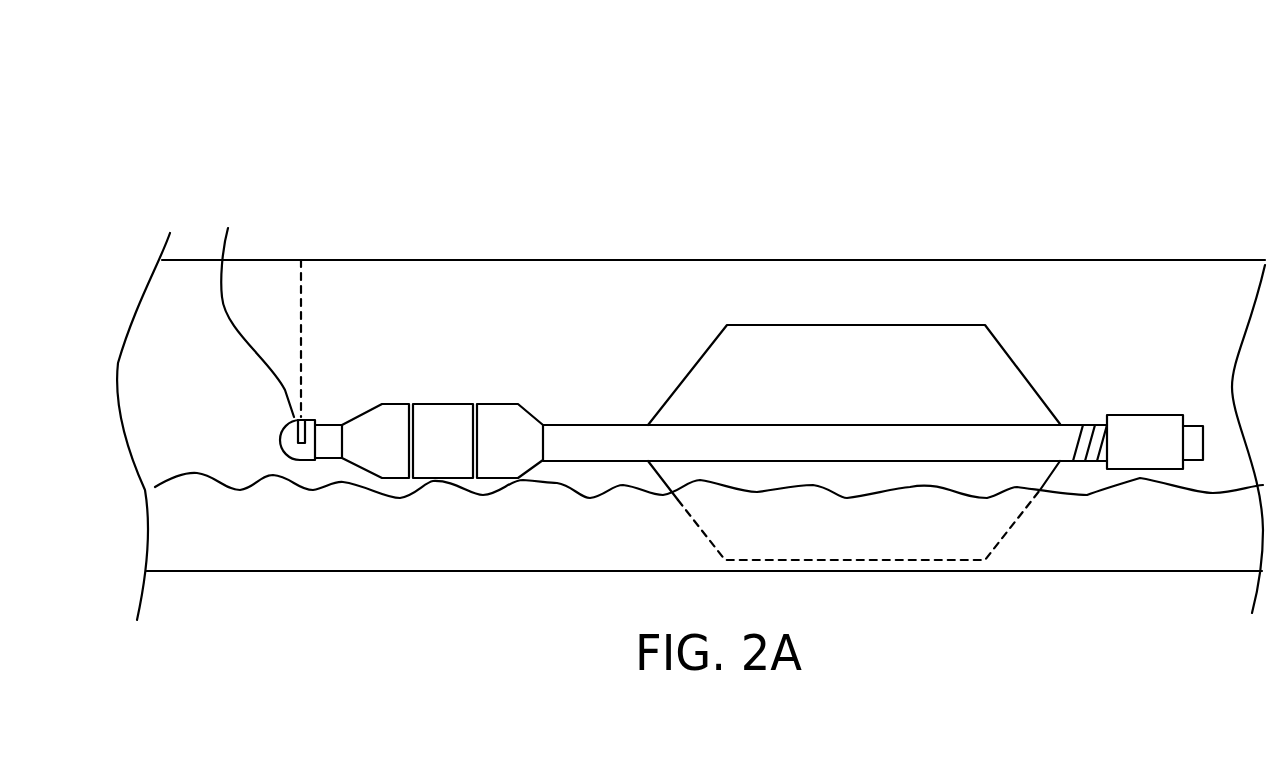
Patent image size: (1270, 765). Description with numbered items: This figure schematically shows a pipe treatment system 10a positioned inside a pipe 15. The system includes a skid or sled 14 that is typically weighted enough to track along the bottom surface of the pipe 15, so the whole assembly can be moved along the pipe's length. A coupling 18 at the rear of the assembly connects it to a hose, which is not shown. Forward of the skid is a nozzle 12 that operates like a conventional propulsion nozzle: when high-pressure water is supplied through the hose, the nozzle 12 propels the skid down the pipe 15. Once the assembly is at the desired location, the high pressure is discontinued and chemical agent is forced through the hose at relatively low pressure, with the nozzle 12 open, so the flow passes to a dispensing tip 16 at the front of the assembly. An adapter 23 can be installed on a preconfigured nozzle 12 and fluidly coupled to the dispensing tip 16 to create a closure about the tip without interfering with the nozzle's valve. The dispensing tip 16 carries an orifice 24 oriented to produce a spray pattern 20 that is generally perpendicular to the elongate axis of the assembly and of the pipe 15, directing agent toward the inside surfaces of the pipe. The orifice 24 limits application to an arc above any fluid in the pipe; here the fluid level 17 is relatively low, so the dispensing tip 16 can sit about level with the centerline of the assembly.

The system 10a is at (235, 178).
The nozzle 12 is at (447, 403).
The skid or sled 14 is at (780, 323).
The pipe 15 is at (373, 571).
The dispensing tip 16 is at (251, 310).
The fluid level 17 is at (238, 488).
The coupling 18 is at (1118, 467).
The spray pattern 20 is at (302, 292).
The adapter 23 is at (370, 472).
The orifice 24 is at (318, 400).